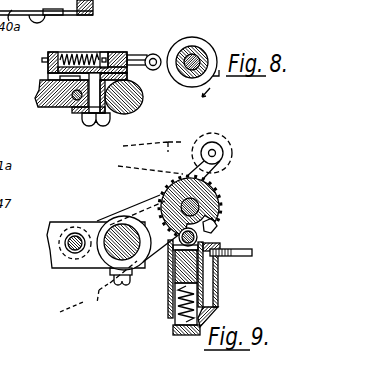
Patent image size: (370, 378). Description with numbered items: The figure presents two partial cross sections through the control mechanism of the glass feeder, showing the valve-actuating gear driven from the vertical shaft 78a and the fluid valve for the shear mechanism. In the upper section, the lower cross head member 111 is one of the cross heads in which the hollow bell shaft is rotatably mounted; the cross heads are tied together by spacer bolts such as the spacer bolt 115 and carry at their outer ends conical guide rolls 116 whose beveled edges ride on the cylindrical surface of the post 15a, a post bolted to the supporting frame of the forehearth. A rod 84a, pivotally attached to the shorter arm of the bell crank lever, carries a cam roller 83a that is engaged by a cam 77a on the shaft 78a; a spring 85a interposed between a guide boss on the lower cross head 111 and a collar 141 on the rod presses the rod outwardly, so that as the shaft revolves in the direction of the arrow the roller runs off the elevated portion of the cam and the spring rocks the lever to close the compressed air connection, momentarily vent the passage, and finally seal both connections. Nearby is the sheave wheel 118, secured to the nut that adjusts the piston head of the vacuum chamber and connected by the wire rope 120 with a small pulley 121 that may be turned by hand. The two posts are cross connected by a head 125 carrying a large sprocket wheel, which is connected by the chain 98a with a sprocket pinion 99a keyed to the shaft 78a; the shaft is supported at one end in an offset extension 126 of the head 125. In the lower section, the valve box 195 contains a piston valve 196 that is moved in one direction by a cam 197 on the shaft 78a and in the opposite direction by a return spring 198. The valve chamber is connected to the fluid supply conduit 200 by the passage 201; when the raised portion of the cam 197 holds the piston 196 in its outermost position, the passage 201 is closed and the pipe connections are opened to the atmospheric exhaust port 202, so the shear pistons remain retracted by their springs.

In FIG. 8, the collar 141 is at (107, 51).
In FIG. 8, the spring 85a is at (84, 54).
In FIG. 8, the rod 84a is at (118, 52).
In FIG. 8, the cam roller 83a is at (157, 53).
In FIG. 8, the vertical shaft 78a is at (196, 54).
In FIG. 9, the vertical shaft 78a is at (200, 208).
In FIG. 8, the cam 77a is at (217, 52).
In FIG. 8, the sheave wheel 118 is at (122, 80).
In FIG. 8, the post 15a is at (142, 101).
In FIG. 9, the post 15a is at (99, 265).
In FIG. 8, the conical guide rolls 116 is at (114, 117).
In FIG. 8, the lower cross head member 111 is at (34, 101).
In FIG. 9, the small pulley 121 is at (222, 140).
In FIG. 9, the wire rope 120 is at (110, 216).
In FIG. 9, the chain 98a is at (121, 240).
In FIG. 9, the offset extension 126 is at (144, 212).
In FIG. 9, the spacer bolt 115 is at (78, 229).
In FIG. 9, the cam 197 is at (220, 189).
In FIG. 9, the sprocket pinion 99a is at (216, 230).
In FIG. 9, the fluid supply conduit 200 is at (253, 253).
In FIG. 9, the piston valve 196 is at (190, 268).
In FIG. 9, the valve box 195 is at (215, 290).
In FIG. 9, the passage 201 is at (214, 307).
In FIG. 9, the atmospheric exhaust port 202 is at (175, 292).
In FIG. 9, the return spring 198 is at (173, 314).
In FIG. 9, the head 125 is at (63, 267).